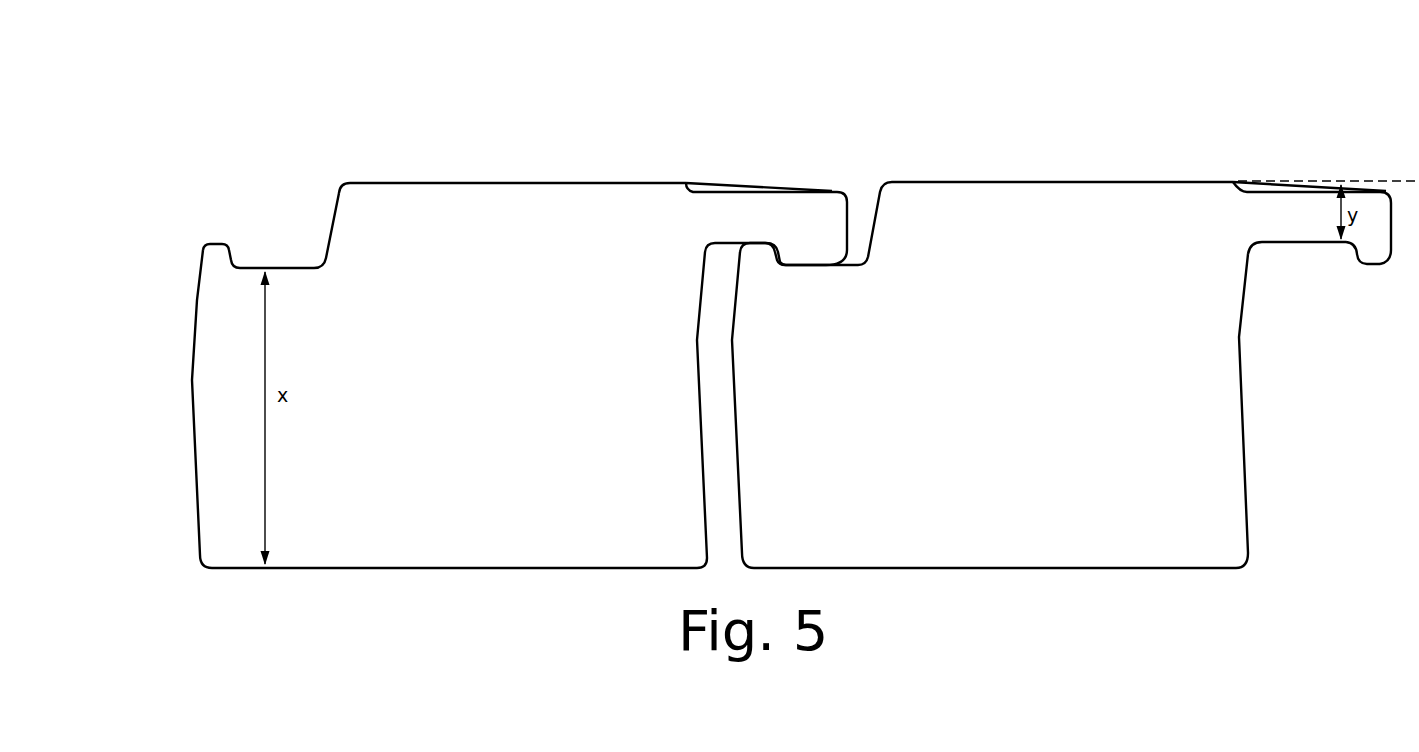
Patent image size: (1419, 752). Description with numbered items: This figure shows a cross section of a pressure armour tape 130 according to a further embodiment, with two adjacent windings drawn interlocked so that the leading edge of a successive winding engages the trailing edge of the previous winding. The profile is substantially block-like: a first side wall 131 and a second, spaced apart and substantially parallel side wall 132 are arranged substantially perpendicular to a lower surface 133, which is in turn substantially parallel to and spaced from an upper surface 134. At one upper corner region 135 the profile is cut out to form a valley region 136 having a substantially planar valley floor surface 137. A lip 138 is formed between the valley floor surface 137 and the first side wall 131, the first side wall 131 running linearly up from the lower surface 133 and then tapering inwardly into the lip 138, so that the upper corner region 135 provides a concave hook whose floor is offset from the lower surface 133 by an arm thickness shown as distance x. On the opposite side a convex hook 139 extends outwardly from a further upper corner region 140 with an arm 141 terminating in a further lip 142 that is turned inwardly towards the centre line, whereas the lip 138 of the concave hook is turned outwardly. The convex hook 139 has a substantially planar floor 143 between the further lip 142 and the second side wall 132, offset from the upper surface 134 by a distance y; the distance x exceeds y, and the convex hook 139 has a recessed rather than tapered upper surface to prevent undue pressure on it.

The tape 130 is at (736, 345).
The first side wall 131 is at (805, 452).
The second side wall 132 is at (1297, 416).
The lower surface 133 is at (487, 570).
The upper surface 134 is at (1045, 118).
The upper corner region 135 is at (262, 162).
The valley region 136 is at (963, 233).
The valley floor surface 137 is at (310, 270).
The lip 138 is at (783, 335).
The convex hook 139 is at (1328, 166).
The further upper corner region 140 is at (1222, 205).
The arm 141 is at (813, 207).
The further lip 142 is at (1367, 255).
The floor 143 is at (1273, 243).